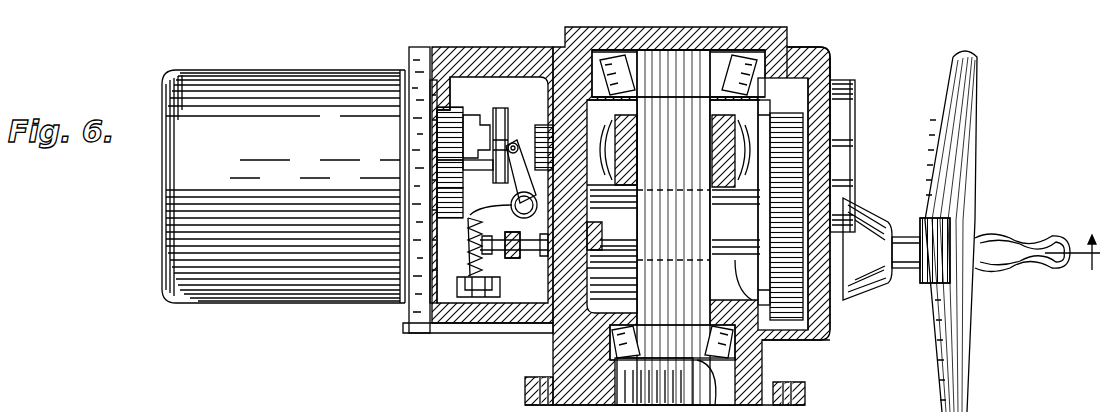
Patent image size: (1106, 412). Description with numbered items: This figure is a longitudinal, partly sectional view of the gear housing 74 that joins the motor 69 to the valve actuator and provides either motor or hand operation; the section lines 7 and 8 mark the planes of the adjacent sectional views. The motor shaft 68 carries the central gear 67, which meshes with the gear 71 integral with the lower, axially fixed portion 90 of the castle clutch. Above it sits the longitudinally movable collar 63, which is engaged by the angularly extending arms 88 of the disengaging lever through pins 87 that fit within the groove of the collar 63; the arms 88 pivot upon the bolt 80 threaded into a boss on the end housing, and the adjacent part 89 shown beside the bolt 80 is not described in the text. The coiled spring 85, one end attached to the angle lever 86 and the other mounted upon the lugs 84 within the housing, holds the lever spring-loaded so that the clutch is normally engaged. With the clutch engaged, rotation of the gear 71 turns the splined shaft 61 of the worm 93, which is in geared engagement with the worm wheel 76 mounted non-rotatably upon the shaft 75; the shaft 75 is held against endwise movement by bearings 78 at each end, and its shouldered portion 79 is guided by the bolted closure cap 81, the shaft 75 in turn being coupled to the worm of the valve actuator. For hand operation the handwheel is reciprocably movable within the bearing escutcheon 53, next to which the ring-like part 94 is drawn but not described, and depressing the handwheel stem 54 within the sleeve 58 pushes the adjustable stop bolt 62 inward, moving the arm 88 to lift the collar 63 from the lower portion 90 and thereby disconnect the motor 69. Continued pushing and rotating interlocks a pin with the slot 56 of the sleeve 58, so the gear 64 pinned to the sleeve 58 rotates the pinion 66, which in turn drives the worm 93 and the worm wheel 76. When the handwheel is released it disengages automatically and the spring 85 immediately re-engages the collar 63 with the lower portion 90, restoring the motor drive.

The section line 7- 7 is at (145, 250).
The section line 8- 8 is at (145, 152).
The bearing escutcheon 53 is at (862, 300).
The handwheel stem 54 is at (575, 233).
The slot 56 is at (972, 332).
The sleeve 58 is at (762, 345).
The splined shaft 61 is at (548, 122).
The adjustable stop bolt 62 is at (613, 287).
The castle clutch collar 63 is at (497, 108).
The gear 64 is at (792, 340).
The pinion 66 is at (828, 66).
The gear 67 is at (500, 198).
The motor shaft 68 is at (440, 182).
The motor 69 is at (252, 295).
The gear 71 is at (430, 110).
The gear housing 74 is at (846, 328).
The shaft 75 is at (712, 202).
The worm wheel 76 is at (796, 113).
The bearings 78 is at (790, 50).
The shouldered portion 79 is at (672, 60).
The bolt 80 is at (516, 217).
The closure cap 81 is at (730, 32).
The lugs 84 is at (472, 298).
The coiled spring 85 is at (452, 252).
The angle lever 86 is at (440, 202).
The pins 87 is at (515, 142).
The arms 88 is at (440, 166).
The collar 89 is at (522, 258).
The lower clutch portion 90 is at (462, 108).
The worm 93 is at (592, 190).
The ring 94 is at (856, 95).